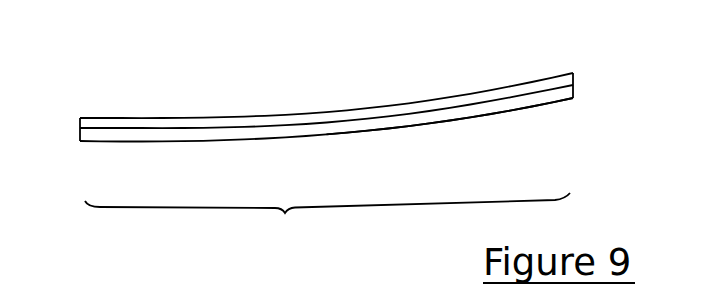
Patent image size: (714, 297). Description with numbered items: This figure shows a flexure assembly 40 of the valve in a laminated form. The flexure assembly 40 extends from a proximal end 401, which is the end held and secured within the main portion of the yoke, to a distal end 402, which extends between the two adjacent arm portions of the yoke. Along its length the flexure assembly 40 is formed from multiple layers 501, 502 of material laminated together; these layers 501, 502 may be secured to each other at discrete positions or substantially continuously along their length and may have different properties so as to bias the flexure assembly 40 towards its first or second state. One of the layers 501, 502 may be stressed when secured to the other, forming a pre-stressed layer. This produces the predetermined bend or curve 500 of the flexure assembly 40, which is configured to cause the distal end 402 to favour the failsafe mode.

The flexure assembly 40 is at (74, 102).
The proximal end 401 is at (122, 122).
The distal end 402 is at (532, 87).
The predetermined bend or curve 500 is at (327, 219).
The layer of material 501 is at (430, 120).
The layer of material 502 is at (520, 92).